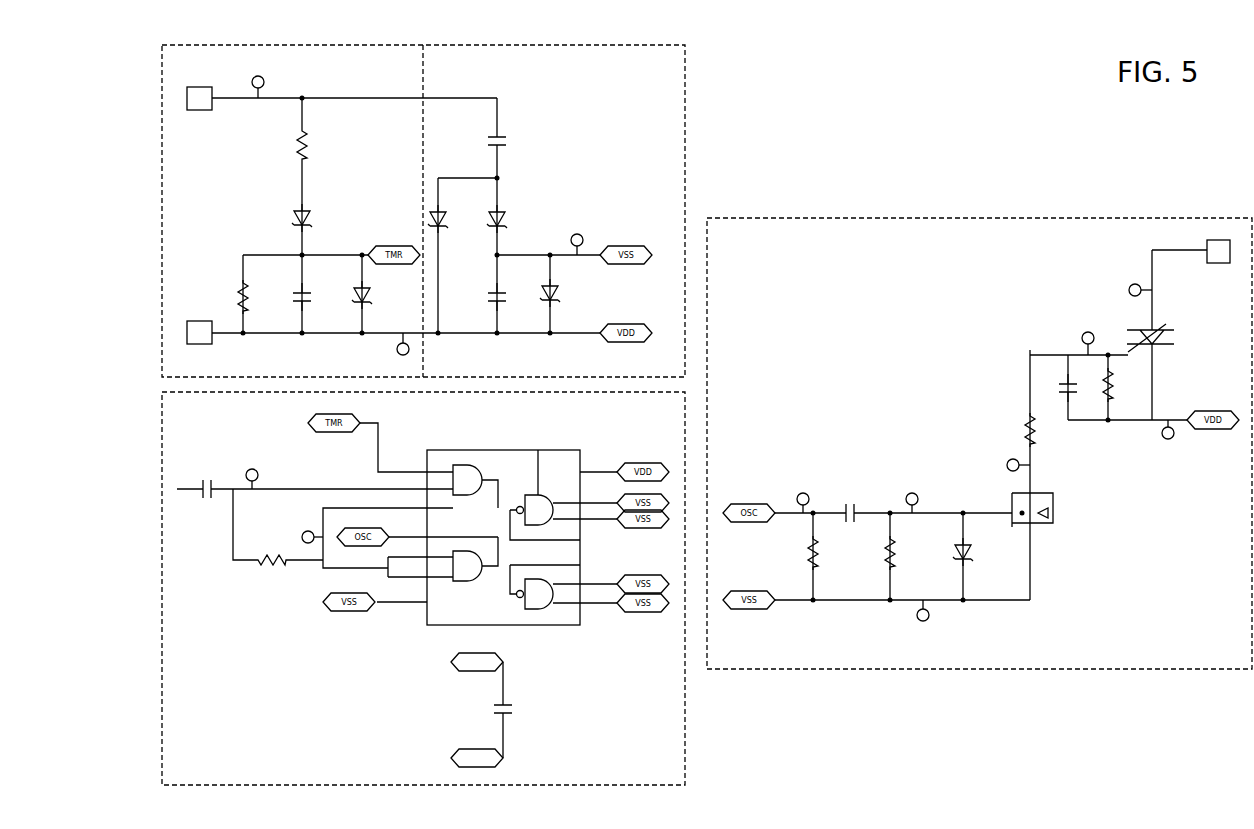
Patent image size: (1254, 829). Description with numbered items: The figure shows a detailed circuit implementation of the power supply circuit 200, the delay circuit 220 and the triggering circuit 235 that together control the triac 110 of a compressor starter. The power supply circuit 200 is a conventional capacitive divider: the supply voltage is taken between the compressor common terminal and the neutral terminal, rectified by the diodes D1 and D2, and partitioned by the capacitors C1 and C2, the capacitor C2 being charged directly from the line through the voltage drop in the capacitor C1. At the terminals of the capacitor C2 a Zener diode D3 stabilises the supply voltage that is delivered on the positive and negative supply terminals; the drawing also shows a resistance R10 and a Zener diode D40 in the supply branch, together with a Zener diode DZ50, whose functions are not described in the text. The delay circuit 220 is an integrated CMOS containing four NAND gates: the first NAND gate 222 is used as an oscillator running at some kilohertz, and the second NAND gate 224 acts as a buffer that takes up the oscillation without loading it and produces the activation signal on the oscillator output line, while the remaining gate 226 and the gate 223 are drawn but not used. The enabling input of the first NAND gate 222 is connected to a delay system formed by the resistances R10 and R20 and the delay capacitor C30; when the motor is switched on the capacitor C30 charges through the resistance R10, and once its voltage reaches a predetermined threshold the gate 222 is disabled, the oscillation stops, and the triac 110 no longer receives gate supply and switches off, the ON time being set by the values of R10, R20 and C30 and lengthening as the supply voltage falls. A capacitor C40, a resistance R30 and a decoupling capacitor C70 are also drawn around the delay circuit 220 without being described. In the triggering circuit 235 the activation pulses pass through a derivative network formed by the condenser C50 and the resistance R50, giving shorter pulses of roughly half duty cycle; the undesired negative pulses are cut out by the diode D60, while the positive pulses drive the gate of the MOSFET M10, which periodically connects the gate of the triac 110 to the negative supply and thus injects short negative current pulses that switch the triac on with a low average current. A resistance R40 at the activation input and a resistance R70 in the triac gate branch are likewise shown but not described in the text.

The power supply circuit 200 is at (700, 90).
The delay circuit 220 is at (150, 192).
The triggering circuit 235 is at (1020, 205).
The triac 110 is at (1163, 337).
The resistance R10 is at (310, 152).
The zener diode D40 is at (310, 225).
The resistance R20 is at (243, 296).
The delay capacitor C30 is at (297, 300).
The zener diode DZ50 is at (371, 293).
The capacitor C1 is at (503, 141).
The diode D2 is at (445, 227).
The diode D1 is at (505, 227).
The capacitor C2 is at (489, 298).
The Zener diode D3 is at (557, 292).
The first NAND gate 222 is at (462, 474).
The second NAND gate 224 is at (466, 580).
The gate 226 is at (538, 450).
The logic gate 223 is at (540, 609).
The capacitor C40 is at (212, 502).
The resistor R30 is at (272, 565).
The capacitor C70 is at (511, 717).
The condenser C50 is at (855, 504).
The resistor R40 is at (807, 551).
The resistance R50 is at (896, 558).
The diode D60 is at (971, 557).
The MOSFET M10 is at (1054, 508).
The resistor R70 is at (1025, 422).